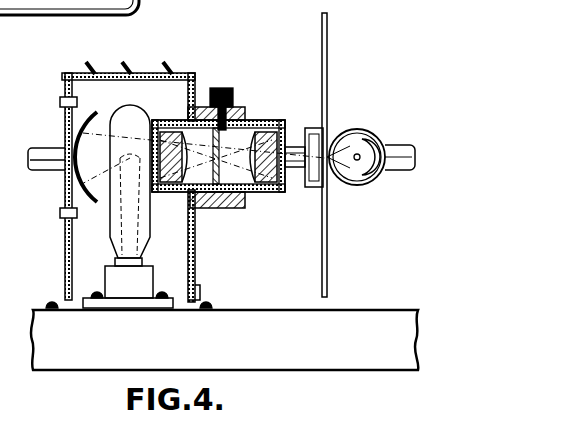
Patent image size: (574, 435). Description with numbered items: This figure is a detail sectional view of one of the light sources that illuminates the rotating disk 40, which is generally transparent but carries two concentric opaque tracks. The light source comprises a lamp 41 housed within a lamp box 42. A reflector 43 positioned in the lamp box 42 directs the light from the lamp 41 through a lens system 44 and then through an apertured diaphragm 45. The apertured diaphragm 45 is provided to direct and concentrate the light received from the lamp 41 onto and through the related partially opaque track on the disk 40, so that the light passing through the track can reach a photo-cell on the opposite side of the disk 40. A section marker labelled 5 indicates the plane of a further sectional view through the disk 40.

The mounting plate with dial 40 is at (327, 233).
The lamp 41 is at (147, 240).
The lamp housing 42 is at (168, 73).
The reflector 43 is at (66, 120).
The lens/coil housing 44 is at (241, 119).
The housing mounting boss 45 is at (226, 200).
The section line 5- 5 is at (405, 6).